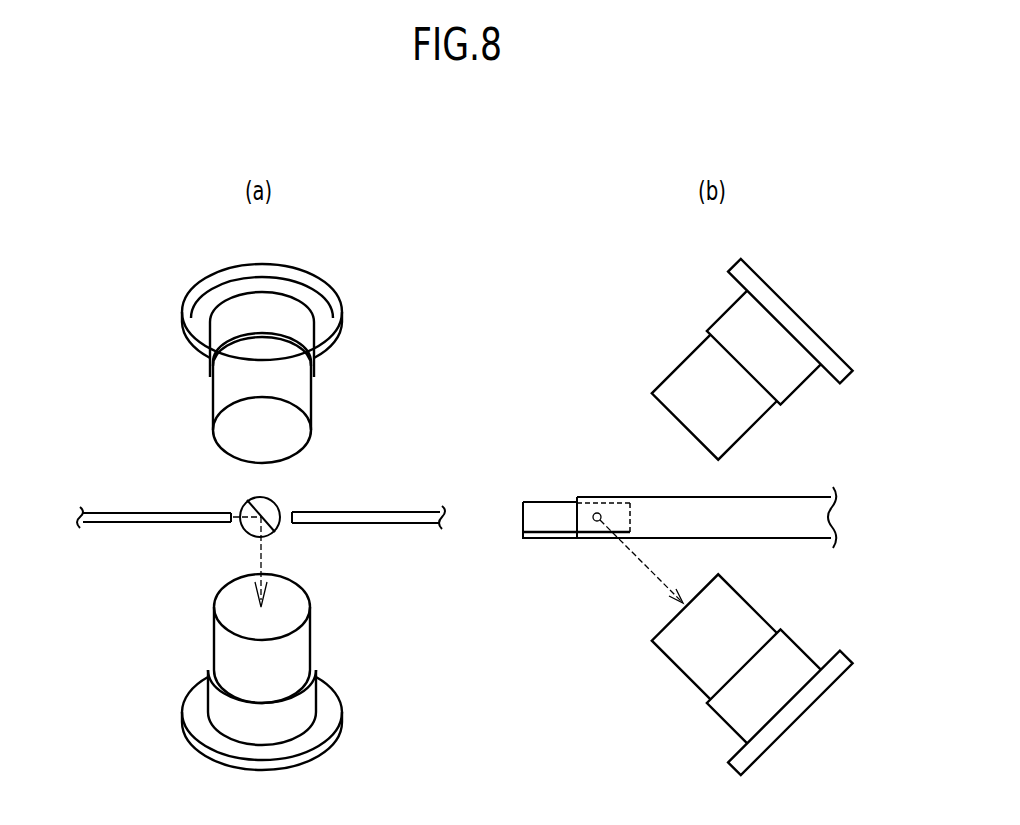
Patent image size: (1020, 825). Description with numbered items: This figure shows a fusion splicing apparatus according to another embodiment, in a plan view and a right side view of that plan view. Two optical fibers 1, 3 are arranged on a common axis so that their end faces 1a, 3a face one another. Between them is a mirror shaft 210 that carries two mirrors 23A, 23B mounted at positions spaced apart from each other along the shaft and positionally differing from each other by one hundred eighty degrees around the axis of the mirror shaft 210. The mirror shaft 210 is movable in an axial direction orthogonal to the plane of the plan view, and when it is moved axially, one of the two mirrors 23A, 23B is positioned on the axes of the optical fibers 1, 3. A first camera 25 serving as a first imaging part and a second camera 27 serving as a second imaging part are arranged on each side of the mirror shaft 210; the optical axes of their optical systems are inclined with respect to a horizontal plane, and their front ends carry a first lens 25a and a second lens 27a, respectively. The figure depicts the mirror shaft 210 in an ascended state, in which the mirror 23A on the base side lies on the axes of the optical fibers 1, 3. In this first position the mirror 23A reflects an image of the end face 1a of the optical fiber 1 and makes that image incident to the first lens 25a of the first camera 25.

The optical fiber 1 is at (113, 513).
The end face of optical fiber 1a is at (243, 506).
The optical fiber 3 is at (405, 512).
The end face of optical fiber 3a is at (291, 506).
The second camera 27 is at (196, 385).
The second lens 27a is at (212, 406).
The first camera 25 is at (196, 702).
The first lens 25a is at (213, 636).
The mirror shaft 210 is at (250, 536).
The mirror 23A is at (267, 535).
The mirror 23B is at (538, 508).